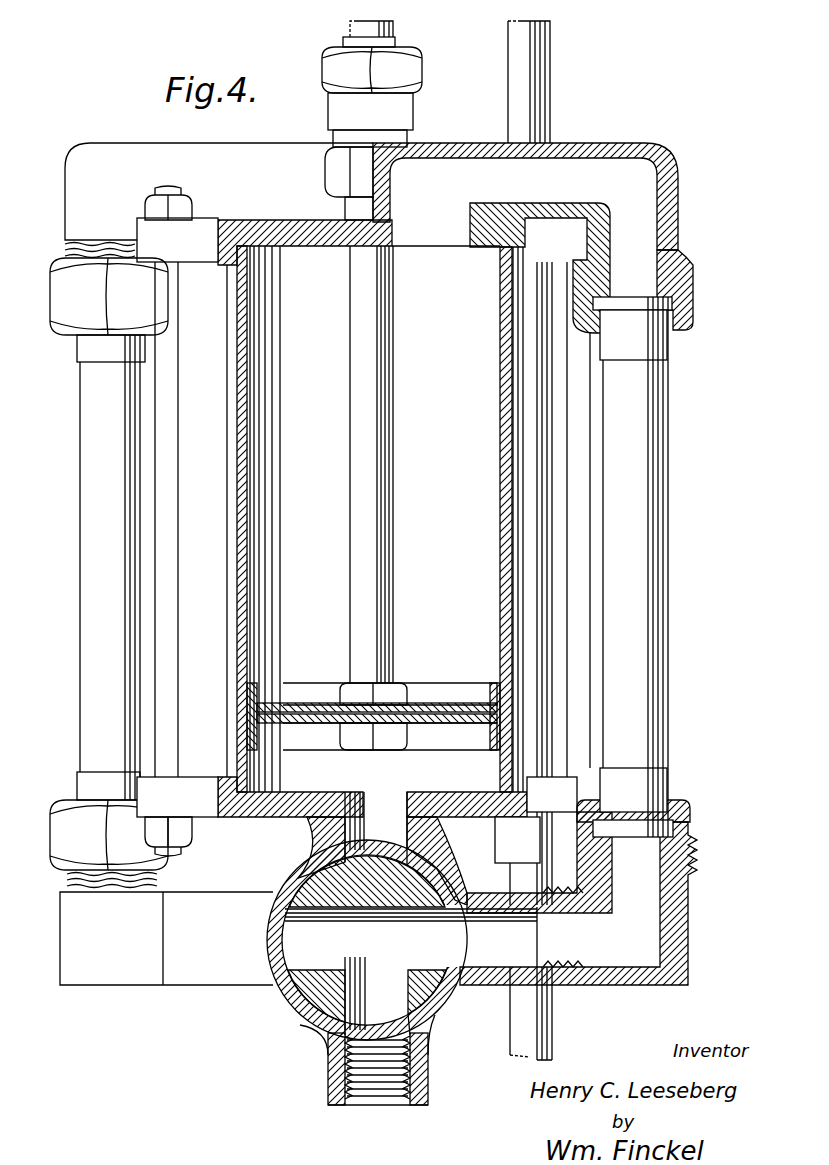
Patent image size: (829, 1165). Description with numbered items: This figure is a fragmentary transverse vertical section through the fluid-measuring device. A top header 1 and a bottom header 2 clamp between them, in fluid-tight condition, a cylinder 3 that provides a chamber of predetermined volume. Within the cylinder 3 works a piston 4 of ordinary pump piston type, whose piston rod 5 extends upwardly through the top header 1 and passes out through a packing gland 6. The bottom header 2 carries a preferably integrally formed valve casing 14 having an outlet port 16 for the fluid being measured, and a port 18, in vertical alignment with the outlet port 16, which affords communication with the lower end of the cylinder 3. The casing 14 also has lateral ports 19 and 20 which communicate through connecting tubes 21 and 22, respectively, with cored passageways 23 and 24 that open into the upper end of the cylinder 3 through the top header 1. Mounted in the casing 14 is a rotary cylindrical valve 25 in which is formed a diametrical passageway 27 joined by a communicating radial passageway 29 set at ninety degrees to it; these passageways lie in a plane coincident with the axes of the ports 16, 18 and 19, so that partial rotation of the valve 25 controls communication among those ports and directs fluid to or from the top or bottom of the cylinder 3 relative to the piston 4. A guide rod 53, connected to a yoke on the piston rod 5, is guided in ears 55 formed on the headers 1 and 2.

The top header 1 is at (263, 220).
The bottom header 2 is at (263, 820).
The cylinder 3 is at (372, 519).
The piston 4 is at (432, 702).
The piston rod 5 is at (395, 31).
The packing gland 6 is at (404, 104).
The valve casing 14 is at (306, 1030).
The outlet port 16 is at (383, 1097).
The port 18 is at (387, 810).
The lateral port 19 is at (527, 953).
The lateral port 20 is at (211, 973).
The connecting tube 21 is at (652, 557).
The connecting tube 22 is at (93, 683).
The cored passageway 23 is at (572, 162).
The cored passageway 24 is at (245, 152).
The rotary cylindrical valve 25 is at (302, 996).
The diametrical passageway 27 is at (349, 965).
The radial passageway 29 is at (388, 1000).
The guide rod 53 is at (540, 72).
The ears 55 is at (508, 836).